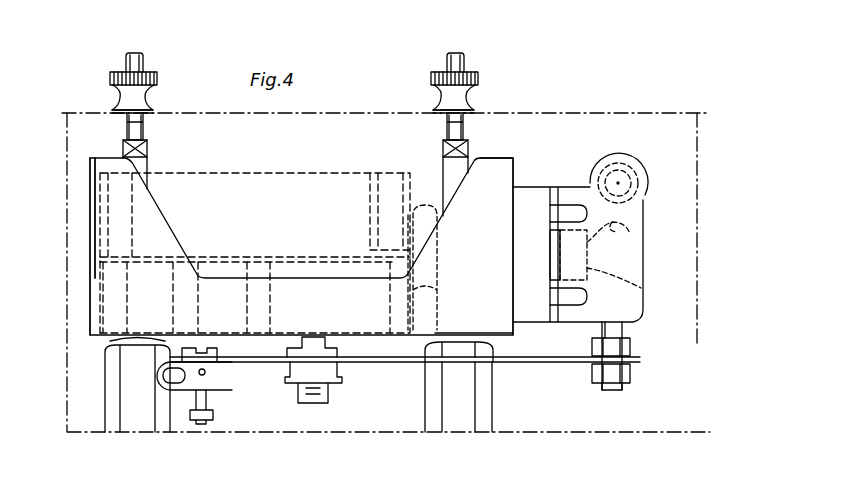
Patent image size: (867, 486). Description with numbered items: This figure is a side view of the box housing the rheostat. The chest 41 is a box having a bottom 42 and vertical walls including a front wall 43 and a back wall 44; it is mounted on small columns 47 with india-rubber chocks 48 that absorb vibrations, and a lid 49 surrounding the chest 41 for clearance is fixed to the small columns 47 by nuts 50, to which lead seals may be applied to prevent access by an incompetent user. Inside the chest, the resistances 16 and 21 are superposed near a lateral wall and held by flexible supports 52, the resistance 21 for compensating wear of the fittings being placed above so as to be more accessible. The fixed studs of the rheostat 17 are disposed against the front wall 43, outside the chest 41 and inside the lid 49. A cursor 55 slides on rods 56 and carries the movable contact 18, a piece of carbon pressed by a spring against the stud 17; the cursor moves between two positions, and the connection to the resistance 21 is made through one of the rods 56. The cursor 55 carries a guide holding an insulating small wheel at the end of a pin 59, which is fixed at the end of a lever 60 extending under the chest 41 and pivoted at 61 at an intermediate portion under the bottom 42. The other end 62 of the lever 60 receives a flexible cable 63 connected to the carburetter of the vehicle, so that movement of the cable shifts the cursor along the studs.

The resistance 16 is at (303, 257).
The rheostat stud 17 is at (550, 252).
The movable contact 18 is at (643, 287).
The resistance 21 is at (270, 174).
The chest 41 is at (500, 147).
The bottom 42 is at (512, 334).
The front wall 43 is at (515, 172).
The back wall 44 is at (88, 166).
The small column 47 is at (140, 133).
The india-rubber chock 48 is at (115, 348).
The lid 49 is at (622, 112).
The nut 50 is at (166, 70).
The flexible support 52 is at (437, 292).
The cursor 55 is at (653, 256).
The rod 56 is at (570, 210).
The pin 59 is at (623, 330).
The lever 60 is at (545, 362).
The pivot 61 is at (326, 340).
The other end of the lever 62 is at (218, 353).
The flexible cable 63 is at (205, 372).